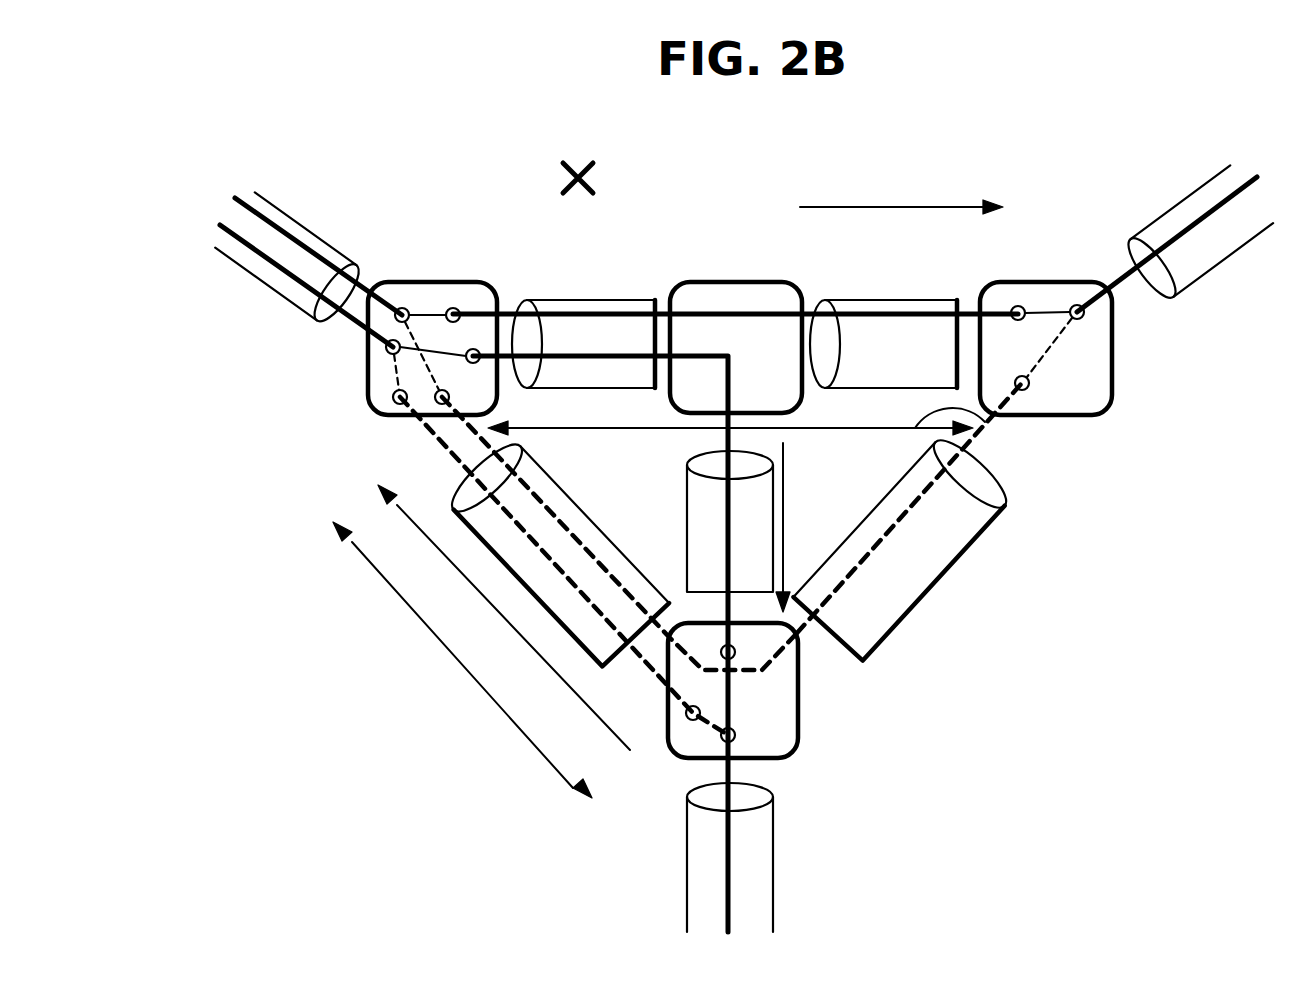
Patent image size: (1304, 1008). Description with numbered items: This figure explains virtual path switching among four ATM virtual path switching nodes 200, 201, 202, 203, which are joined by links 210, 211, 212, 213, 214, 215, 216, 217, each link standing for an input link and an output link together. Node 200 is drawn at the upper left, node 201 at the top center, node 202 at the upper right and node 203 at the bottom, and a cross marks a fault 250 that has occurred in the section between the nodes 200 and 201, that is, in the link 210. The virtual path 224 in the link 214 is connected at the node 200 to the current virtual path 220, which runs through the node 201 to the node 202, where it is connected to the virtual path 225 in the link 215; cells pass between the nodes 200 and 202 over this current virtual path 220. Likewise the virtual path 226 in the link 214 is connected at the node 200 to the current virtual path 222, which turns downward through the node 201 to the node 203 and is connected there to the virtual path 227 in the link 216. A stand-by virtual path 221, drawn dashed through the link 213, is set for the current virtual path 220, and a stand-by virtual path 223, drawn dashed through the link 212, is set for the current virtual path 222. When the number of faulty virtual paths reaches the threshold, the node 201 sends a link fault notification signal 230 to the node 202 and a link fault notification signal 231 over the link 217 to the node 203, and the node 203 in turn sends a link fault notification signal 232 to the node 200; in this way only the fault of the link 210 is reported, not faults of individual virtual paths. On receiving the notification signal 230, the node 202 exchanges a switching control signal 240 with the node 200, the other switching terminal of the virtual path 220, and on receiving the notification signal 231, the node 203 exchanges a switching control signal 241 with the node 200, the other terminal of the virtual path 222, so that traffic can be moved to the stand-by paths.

The ATM virtual path switching node 200 is at (405, 282).
The ATM virtual path switching node 201 is at (740, 282).
The ATM virtual path switching node 202 is at (1045, 282).
The ATM virtual path switching node 203 is at (800, 735).
The link 210 is at (567, 300).
The link 211 is at (886, 299).
The link 212 is at (586, 517).
The link 213 is at (965, 550).
The link 214 is at (290, 305).
The link 215 is at (1196, 285).
The link 216 is at (774, 897).
The link 217 is at (774, 480).
The current virtual path 220 is at (615, 312).
The stand-by virtual path 221 is at (875, 543).
The current virtual path 222 is at (578, 357).
The stand-by virtual path 223 is at (462, 465).
The virtual path 224 is at (277, 212).
The virtual path 225 is at (1198, 218).
The virtual path 226 is at (263, 262).
The virtual path 227 is at (730, 852).
The link fault notification signal 230 is at (928, 205).
The link fault notification signal 231 is at (785, 518).
The link fault notification signal 232 is at (605, 727).
The switching control signal 240 is at (990, 424).
The switching control signal 241 is at (522, 727).
The fault 250 is at (578, 165).